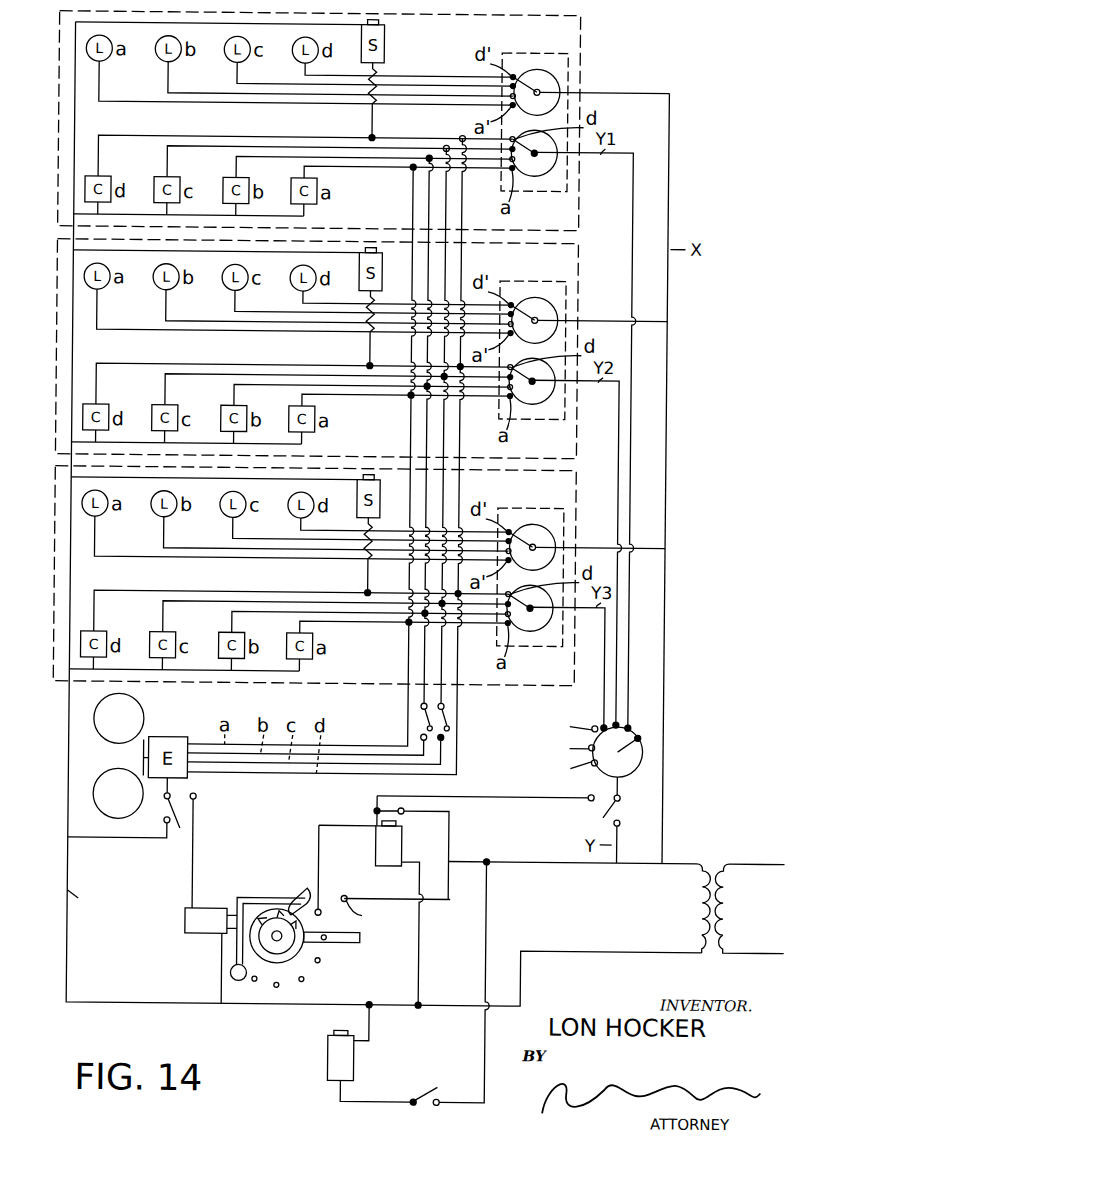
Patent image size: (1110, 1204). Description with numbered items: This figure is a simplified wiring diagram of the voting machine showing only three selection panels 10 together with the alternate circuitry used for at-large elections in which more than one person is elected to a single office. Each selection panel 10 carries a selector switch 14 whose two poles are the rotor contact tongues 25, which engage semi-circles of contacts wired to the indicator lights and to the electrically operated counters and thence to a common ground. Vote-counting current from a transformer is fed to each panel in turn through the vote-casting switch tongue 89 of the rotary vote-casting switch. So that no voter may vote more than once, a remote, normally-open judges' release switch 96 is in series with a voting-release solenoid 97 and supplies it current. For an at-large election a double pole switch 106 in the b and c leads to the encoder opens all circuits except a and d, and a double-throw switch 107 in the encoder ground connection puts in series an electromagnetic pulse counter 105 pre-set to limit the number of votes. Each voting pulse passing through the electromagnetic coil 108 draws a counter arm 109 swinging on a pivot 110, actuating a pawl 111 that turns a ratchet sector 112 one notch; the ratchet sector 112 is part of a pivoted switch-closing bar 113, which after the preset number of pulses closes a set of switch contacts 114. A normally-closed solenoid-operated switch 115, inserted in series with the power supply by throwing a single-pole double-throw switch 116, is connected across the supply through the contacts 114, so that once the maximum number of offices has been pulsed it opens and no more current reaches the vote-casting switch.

The selection panel 10 is at (343, 348).
The selector switch 14 is at (583, 352).
The rotor contact tongue 25 is at (553, 480).
The vote-casting switch tongue 89 is at (641, 740).
The judges' release switch 96 is at (439, 1090).
The voting-release solenoid 97 is at (333, 1054).
The electromagnetic pulse counter 105 is at (258, 856).
The double pole switch 106 is at (422, 712).
The double-throw switch 107 is at (183, 834).
The electromagnetic coil 108 is at (214, 937).
The counter arm 109 is at (250, 890).
The pivot 110 is at (226, 983).
The pawl 111 is at (311, 889).
The ratchet sector 112 is at (293, 945).
The switch-closing bar 113 is at (364, 942).
The switch contacts 114 is at (366, 916).
The solenoid-operated switch 115 is at (377, 810).
The single-pole double-throw switch 116 is at (606, 812).